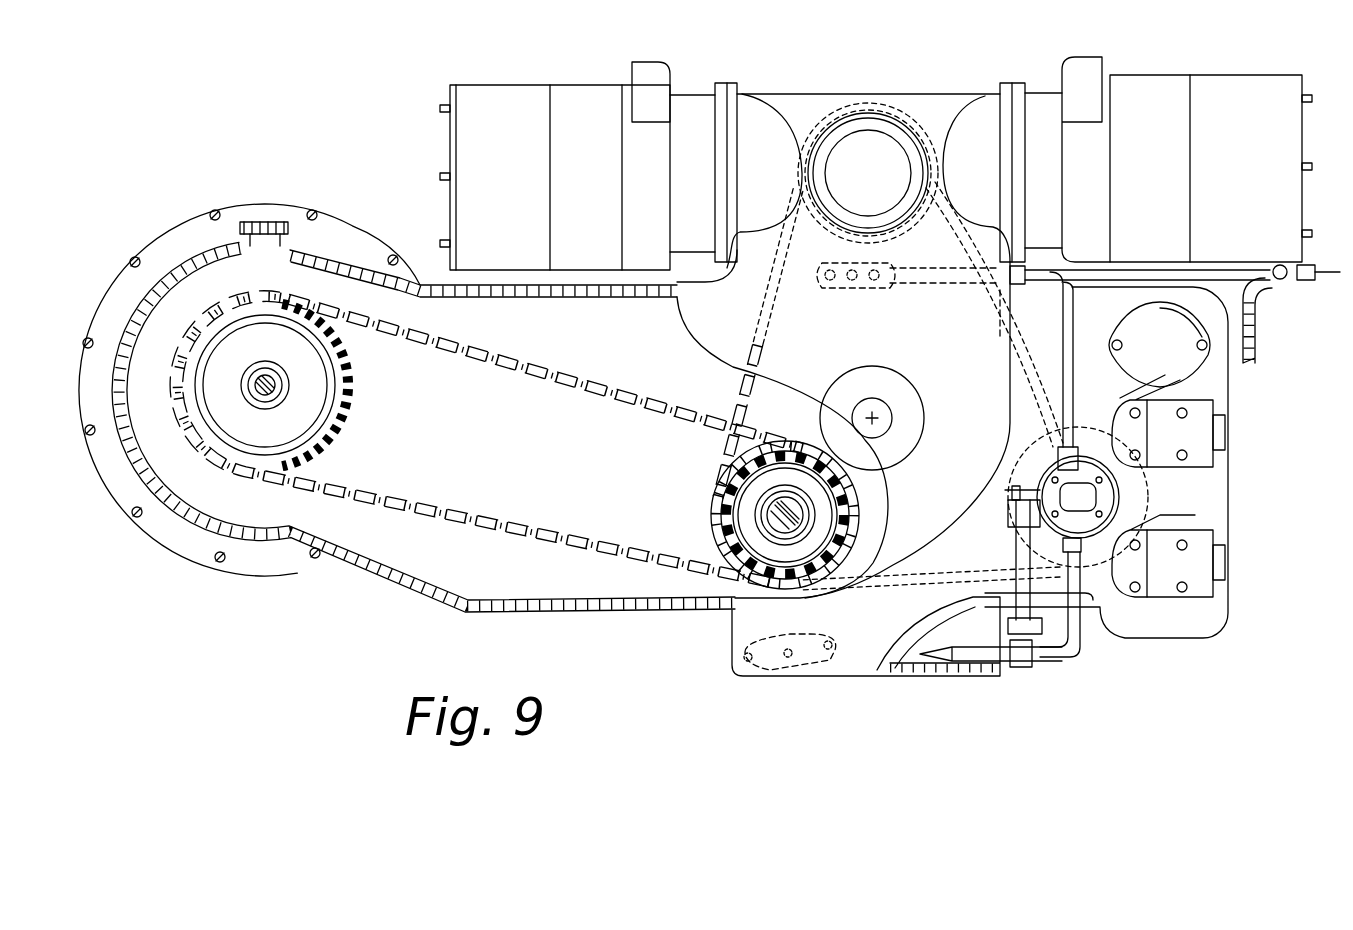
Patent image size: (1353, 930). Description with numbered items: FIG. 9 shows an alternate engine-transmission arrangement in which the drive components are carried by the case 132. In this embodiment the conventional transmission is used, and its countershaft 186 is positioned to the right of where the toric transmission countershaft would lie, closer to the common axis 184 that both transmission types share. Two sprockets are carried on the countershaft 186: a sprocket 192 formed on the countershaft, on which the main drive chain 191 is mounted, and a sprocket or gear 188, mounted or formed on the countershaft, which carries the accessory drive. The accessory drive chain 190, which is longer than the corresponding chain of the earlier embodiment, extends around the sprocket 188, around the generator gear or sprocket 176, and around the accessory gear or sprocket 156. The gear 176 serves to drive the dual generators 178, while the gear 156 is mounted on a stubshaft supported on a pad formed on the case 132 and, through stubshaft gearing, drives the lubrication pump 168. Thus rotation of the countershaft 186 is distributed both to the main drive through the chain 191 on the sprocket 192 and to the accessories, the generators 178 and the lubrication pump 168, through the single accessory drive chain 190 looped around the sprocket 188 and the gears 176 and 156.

The case 132 is at (422, 588).
The gear or sprocket 156 is at (1040, 447).
The lubrication pump 168 is at (1123, 497).
The gear or sprocket 176 is at (880, 222).
The dual generators 178 is at (942, 125).
The common axis 184 is at (873, 418).
The countershaft 186 is at (773, 522).
The sprocket or gear 188 is at (746, 440).
The accessory drive chain 190 is at (745, 386).
The main drive chain 191 is at (508, 372).
The sprocket 192 is at (775, 462).